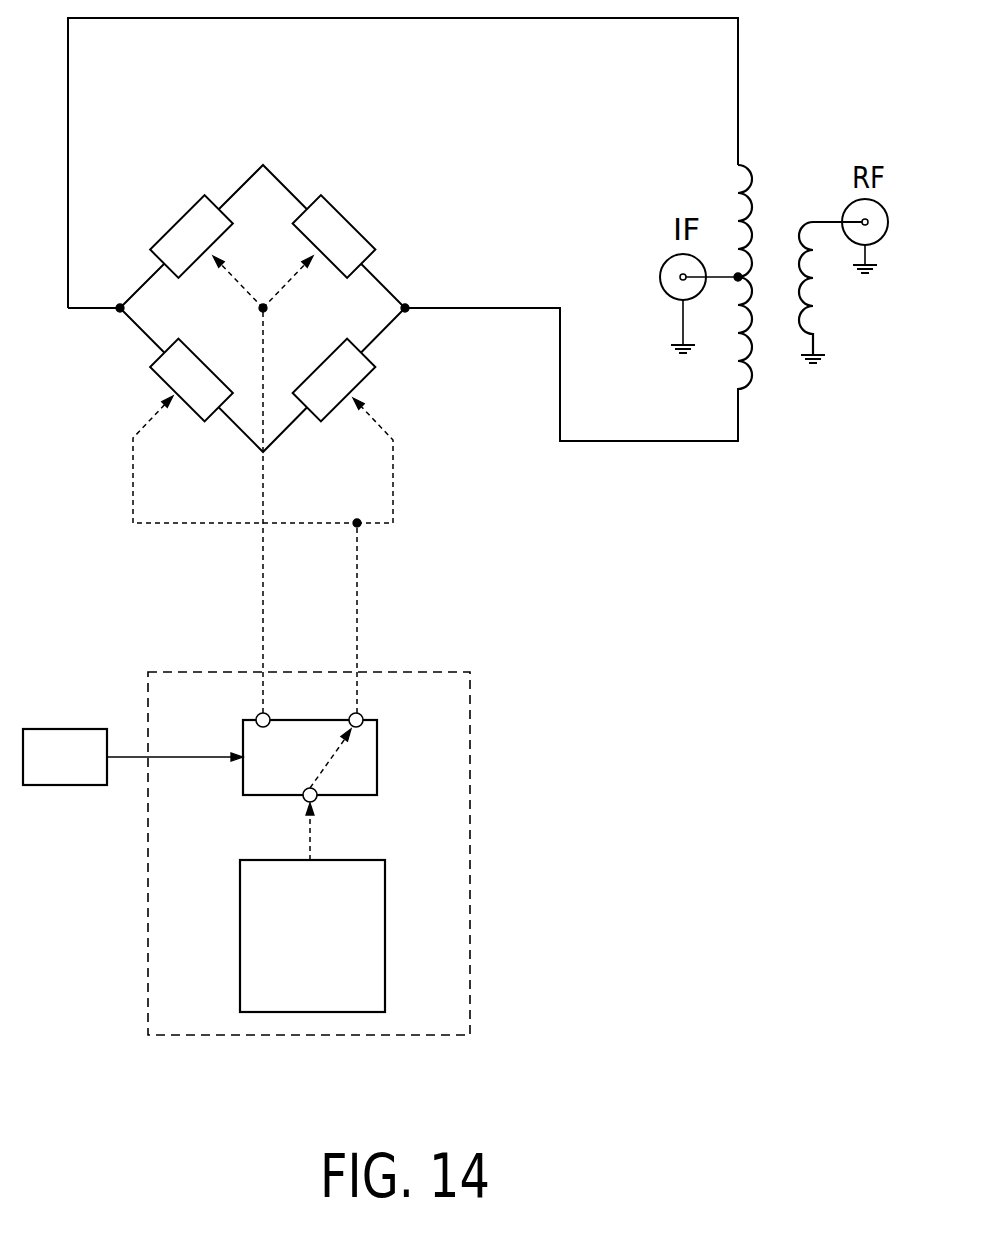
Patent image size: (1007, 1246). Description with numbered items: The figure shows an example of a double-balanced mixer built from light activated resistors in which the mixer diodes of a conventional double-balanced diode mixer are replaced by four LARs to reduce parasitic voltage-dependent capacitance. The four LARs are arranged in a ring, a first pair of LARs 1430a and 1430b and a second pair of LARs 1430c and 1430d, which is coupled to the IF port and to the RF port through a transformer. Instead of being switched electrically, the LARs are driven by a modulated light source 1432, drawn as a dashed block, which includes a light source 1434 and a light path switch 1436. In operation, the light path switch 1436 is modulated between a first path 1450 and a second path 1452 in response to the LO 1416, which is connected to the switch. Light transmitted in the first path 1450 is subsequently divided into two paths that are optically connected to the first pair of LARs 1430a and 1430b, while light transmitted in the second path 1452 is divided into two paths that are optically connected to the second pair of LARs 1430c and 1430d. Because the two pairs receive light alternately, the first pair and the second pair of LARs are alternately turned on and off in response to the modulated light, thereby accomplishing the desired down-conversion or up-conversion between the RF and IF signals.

The LAR of first pair 1430a is at (178, 222).
The LAR of first pair 1430b is at (348, 222).
The LAR of second pair 1430c is at (152, 368).
The LAR of second pair 1430d is at (372, 373).
The first path 1450 is at (262, 585).
The second path 1452 is at (357, 586).
The LO 1416 is at (65, 729).
The modulated light source 1432 is at (470, 803).
The light path switch 1436 is at (378, 757).
The light source 1434 is at (337, 993).